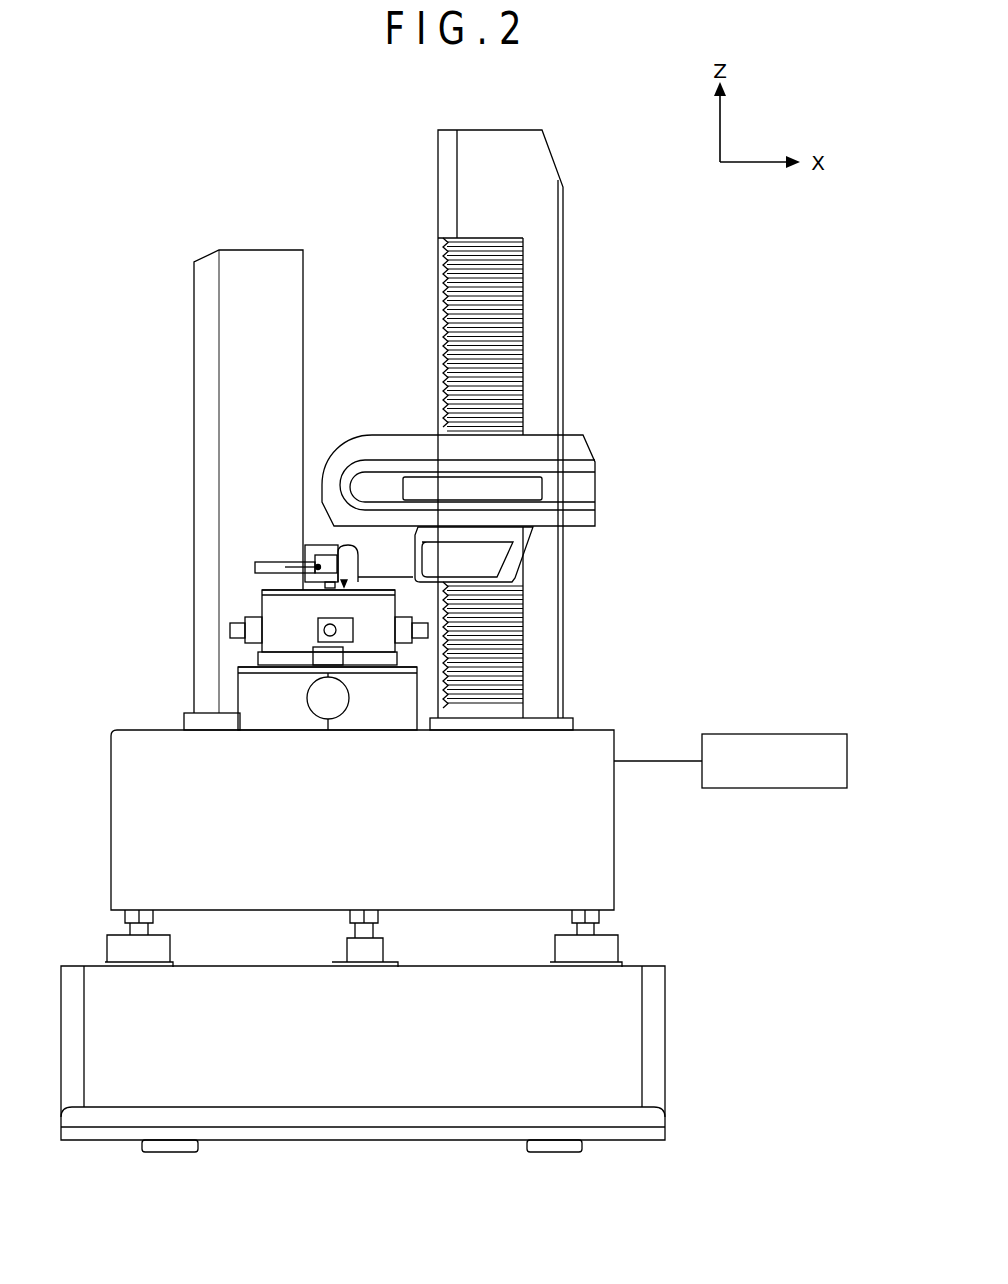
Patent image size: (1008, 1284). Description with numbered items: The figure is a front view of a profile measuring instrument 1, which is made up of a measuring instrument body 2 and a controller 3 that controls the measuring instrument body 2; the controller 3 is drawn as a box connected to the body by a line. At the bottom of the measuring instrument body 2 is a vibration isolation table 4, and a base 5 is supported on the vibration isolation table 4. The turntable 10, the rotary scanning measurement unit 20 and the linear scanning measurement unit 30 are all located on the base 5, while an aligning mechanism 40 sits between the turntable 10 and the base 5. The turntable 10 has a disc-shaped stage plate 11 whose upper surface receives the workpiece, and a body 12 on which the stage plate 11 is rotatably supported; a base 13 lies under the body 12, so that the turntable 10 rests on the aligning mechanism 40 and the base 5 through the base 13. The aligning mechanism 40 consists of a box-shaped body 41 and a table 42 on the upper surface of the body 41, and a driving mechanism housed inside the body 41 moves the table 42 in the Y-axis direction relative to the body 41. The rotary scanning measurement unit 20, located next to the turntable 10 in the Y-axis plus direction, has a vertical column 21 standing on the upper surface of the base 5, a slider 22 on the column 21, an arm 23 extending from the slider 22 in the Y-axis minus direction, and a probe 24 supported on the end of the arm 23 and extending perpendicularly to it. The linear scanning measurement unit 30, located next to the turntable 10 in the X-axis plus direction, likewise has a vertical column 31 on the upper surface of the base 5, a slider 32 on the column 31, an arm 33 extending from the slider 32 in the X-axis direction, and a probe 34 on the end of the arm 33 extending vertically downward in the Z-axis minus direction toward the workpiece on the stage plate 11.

The profile measuring instrument 1 is at (710, 586).
The measuring instrument body 2 is at (604, 718).
The controller 3 is at (796, 734).
The vibration isolation table 4 is at (665, 1022).
The base 5 is at (615, 860).
The turntable 10 is at (269, 596).
The stage plate 11 is at (270, 587).
The body 12 is at (275, 608).
The base 13 is at (258, 666).
The rotary scanning measurement unit 20 is at (206, 462).
The column 21 is at (262, 250).
The slider 22 is at (304, 545).
The arm 23 is at (332, 548).
The probe 24 is at (299, 562).
The linear scanning measurement unit 30 is at (495, 430).
The column 31 is at (566, 232).
The slider 32 is at (597, 478).
The arm 33 is at (422, 545).
The probe 34 is at (368, 580).
The aligning mechanism 40 is at (266, 728).
The body 41 is at (380, 710).
The table 42 is at (407, 668).